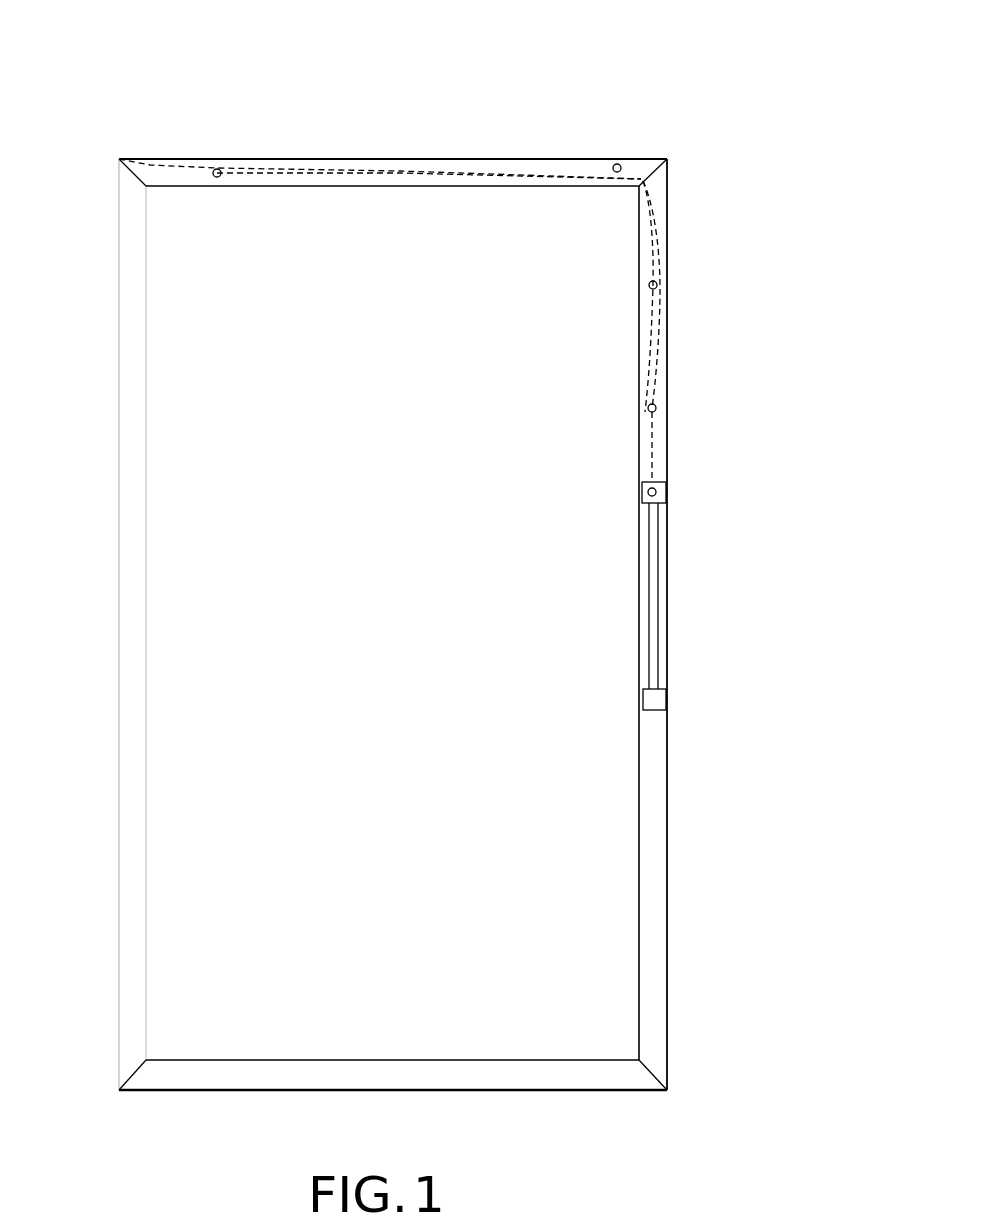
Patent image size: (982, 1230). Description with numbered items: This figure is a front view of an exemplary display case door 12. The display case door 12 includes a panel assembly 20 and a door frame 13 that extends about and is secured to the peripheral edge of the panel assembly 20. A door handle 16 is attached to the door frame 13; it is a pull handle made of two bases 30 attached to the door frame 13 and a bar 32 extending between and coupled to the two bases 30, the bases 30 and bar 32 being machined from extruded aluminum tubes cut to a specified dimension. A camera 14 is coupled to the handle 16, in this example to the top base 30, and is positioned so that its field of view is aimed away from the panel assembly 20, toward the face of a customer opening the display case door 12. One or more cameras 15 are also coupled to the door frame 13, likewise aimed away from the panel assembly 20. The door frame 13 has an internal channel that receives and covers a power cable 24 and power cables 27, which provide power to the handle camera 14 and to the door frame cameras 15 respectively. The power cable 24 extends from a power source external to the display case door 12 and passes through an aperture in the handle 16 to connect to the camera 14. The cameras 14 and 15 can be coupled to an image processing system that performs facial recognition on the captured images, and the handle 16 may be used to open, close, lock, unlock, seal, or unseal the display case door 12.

The display case door 12 is at (541, 45).
The door frame 13 is at (457, 168).
The camera 14 is at (656, 492).
The cameras 15 is at (656, 410).
The door handle 16 is at (655, 652).
The panel assembly 20 is at (588, 835).
The power cable 24 is at (650, 203).
The power cables 27 is at (188, 172).
The bases 30 is at (665, 502).
The bar 32 is at (655, 598).